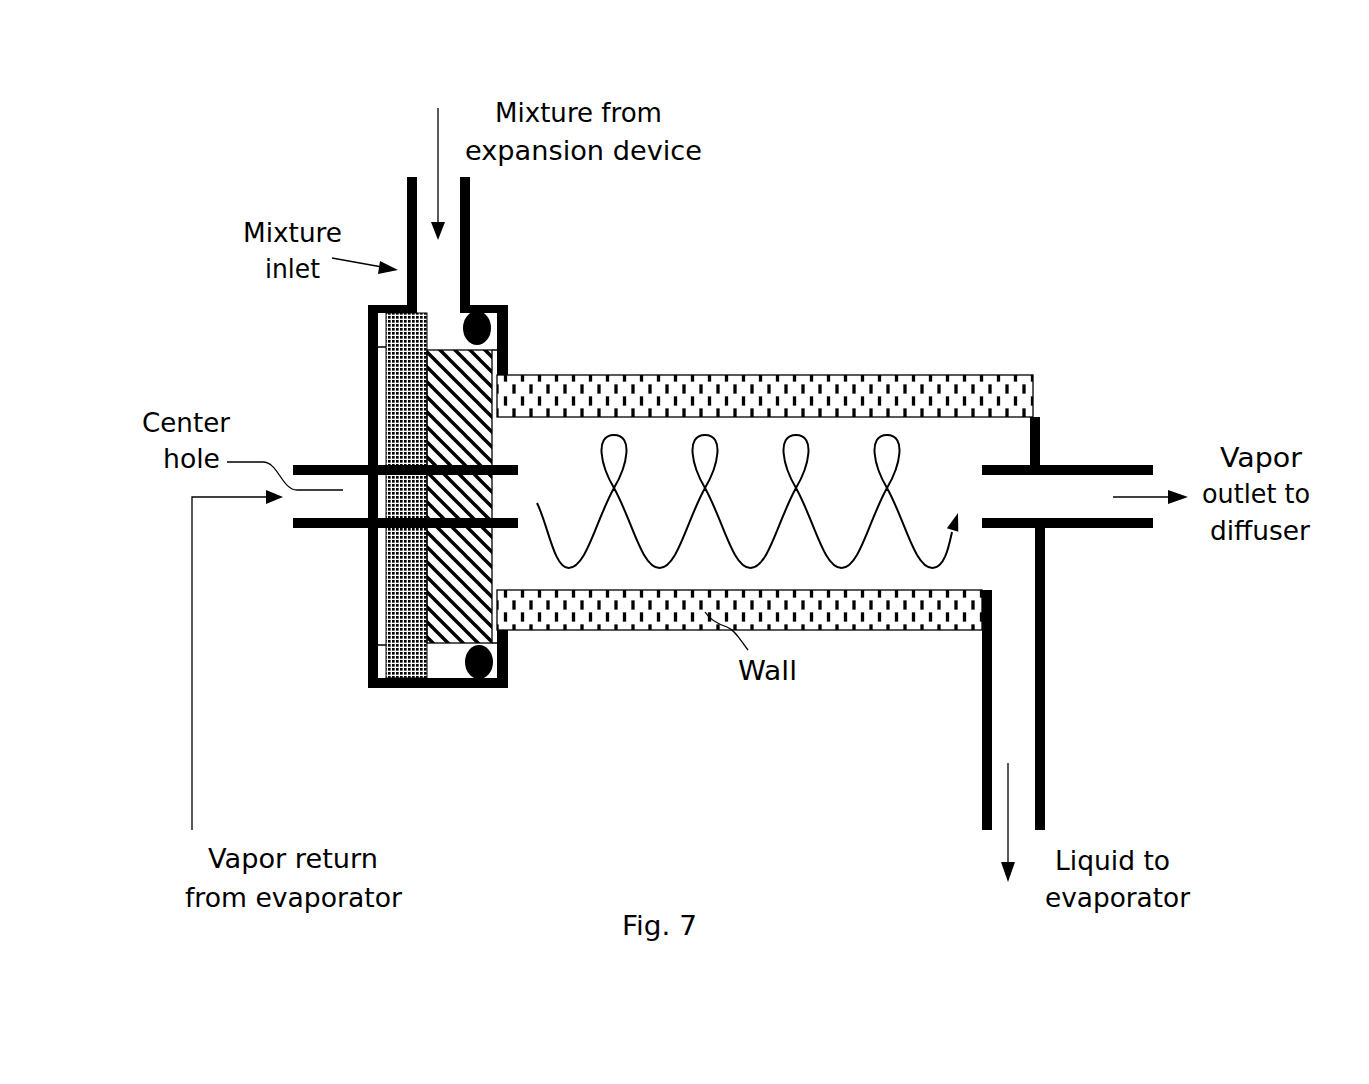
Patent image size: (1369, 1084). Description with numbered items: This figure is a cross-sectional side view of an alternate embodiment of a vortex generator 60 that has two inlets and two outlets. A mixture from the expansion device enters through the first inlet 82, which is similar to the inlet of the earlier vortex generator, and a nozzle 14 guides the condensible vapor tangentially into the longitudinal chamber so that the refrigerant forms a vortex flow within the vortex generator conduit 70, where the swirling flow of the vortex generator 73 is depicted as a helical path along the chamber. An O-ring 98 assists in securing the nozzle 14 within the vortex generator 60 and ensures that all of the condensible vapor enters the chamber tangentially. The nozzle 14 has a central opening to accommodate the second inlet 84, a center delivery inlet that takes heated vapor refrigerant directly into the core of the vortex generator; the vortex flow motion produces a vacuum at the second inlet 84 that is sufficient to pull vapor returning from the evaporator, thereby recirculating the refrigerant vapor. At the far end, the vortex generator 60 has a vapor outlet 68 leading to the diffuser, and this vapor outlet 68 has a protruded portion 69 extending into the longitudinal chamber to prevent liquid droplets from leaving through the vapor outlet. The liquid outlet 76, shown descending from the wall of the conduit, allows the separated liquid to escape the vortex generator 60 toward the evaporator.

The vortex generator 60 is at (1085, 152).
The first inlet 82 is at (470, 225).
The O-ring 98 is at (470, 687).
The nozzle 14 is at (478, 603).
The second inlet 84 is at (325, 528).
The vortex generator conduit 70 is at (658, 442).
The vortex generator 73 is at (806, 398).
The vapor outlet 68 is at (1077, 462).
The protruded portion of vapor outlet 69 is at (1000, 528).
The liquid outlet 76 is at (1012, 690).